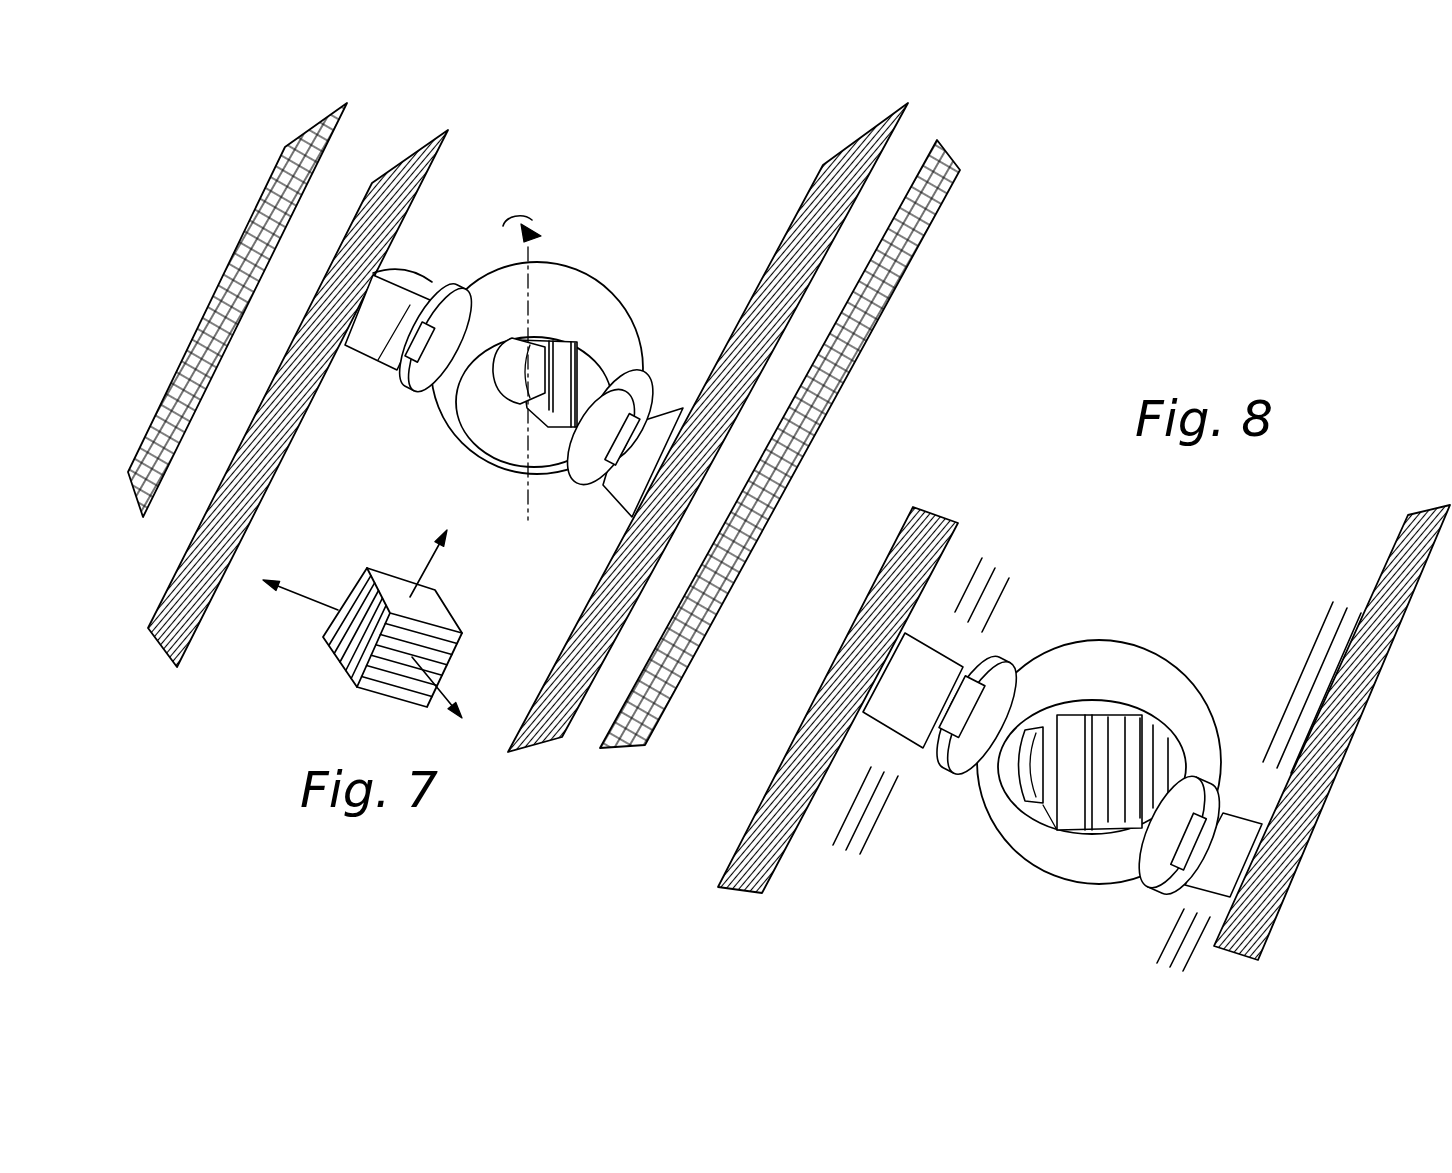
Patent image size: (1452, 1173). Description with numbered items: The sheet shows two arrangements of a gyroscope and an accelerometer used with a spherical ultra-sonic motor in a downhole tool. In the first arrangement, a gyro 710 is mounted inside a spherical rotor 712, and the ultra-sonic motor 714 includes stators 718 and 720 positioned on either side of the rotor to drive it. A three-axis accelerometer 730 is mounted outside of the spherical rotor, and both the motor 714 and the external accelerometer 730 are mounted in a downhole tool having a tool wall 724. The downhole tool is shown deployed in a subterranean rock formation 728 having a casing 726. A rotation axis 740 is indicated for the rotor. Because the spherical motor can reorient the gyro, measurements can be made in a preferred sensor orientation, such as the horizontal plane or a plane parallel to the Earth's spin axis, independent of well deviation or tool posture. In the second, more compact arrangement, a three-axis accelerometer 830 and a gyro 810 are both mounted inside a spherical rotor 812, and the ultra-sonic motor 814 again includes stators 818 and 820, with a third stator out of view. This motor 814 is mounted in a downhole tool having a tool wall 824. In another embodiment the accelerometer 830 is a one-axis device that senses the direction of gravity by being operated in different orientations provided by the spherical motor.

In FIG. 7, the gyro 710 is at (513, 387).
In FIG. 7, the spherical rotor 712 is at (571, 284).
In FIG. 7, the ultra-sonic motor 714 is at (681, 252).
In FIG. 7, the stator 718 is at (590, 472).
In FIG. 7, the stator 720 is at (412, 384).
In FIG. 7, the tool wall 724 is at (745, 338).
In FIG. 7, the casing 726 is at (272, 208).
In FIG. 7, the subterranean rock formation 728 is at (192, 275).
In FIG. 7, the 3-axis accelerometer 730 is at (395, 587).
In FIG. 7, the rotation axis 740 is at (534, 217).
In FIG. 8, the gyro 810 is at (1033, 800).
In FIG. 8, the spherical rotor 812 is at (1131, 686).
In FIG. 8, the ultra-sonic motor 814 is at (1185, 617).
In FIG. 8, the stator 818 is at (1167, 887).
In FIG. 8, the stator 820 is at (963, 773).
In FIG. 8, the tool wall 824 is at (1404, 565).
In FIG. 8, the 3-axis accelerometer 830 is at (1107, 830).